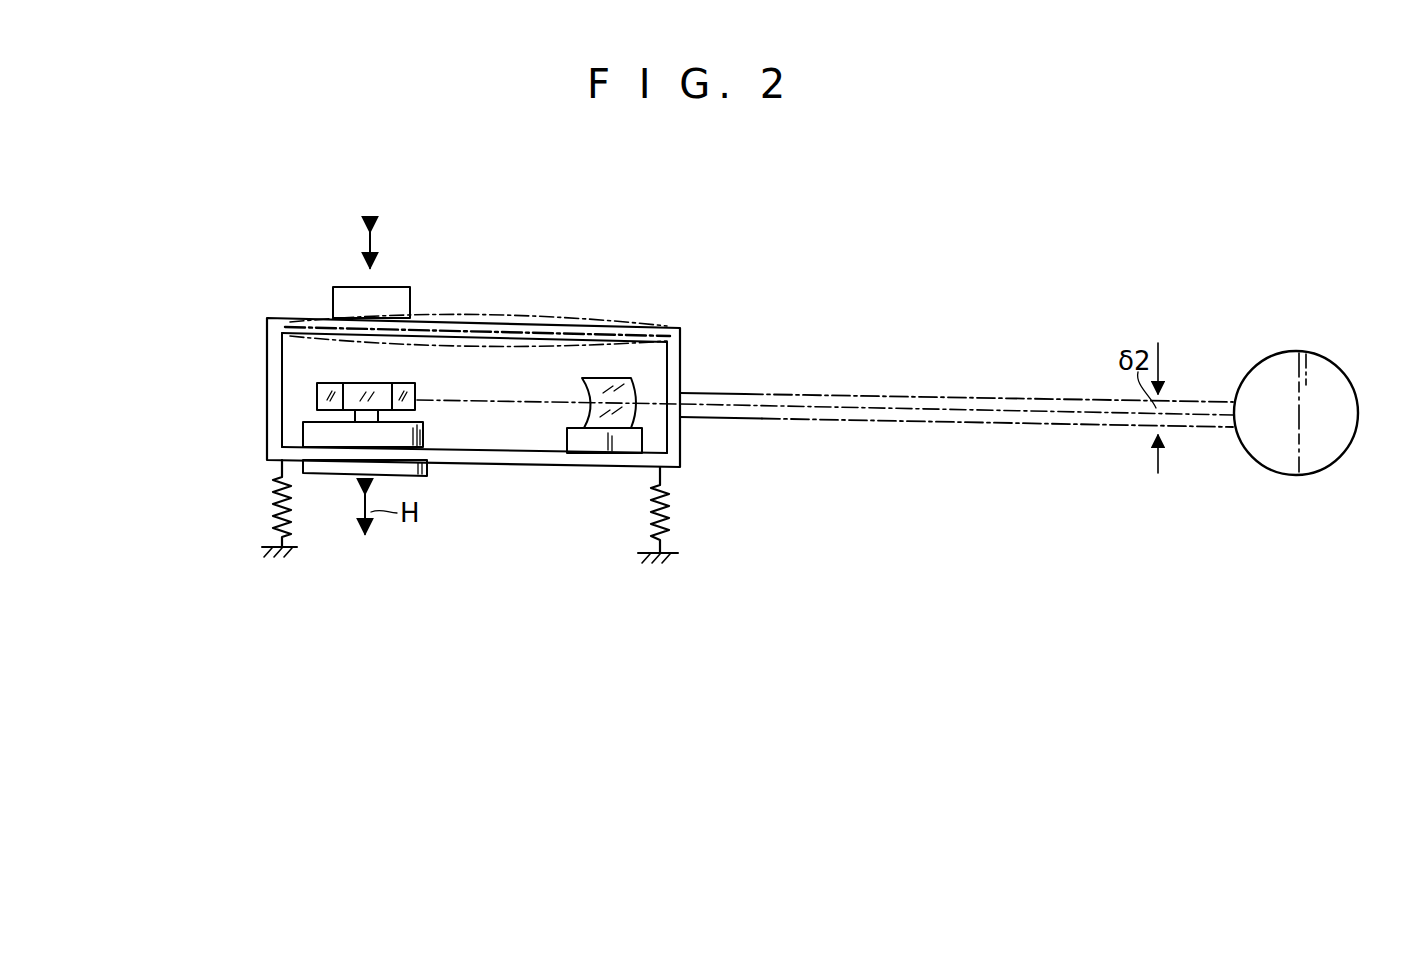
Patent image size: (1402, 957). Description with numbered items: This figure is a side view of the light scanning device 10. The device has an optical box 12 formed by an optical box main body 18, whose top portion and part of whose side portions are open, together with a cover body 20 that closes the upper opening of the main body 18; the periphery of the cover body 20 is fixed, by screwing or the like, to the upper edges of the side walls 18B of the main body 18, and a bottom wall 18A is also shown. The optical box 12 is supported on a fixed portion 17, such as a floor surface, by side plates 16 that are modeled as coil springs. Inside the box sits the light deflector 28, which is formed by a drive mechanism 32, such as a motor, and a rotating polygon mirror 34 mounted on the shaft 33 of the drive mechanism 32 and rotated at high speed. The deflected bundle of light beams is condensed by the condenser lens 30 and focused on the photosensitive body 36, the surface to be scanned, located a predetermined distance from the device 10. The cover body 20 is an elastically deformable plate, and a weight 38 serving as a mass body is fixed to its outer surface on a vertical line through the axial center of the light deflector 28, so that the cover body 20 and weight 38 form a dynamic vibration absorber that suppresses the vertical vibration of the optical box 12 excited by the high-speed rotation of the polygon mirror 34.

The light scanning device 10 is at (512, 238).
The optical box 12 is at (265, 370).
The side plates 16 is at (278, 497).
The fixed portion 17 is at (672, 553).
The optical box main body 18 is at (266, 452).
The bottom plate 18A is at (514, 468).
The side walls 18B is at (267, 347).
The cover body 20 is at (325, 317).
The light deflector 28 is at (291, 413).
The condenser lens 30 is at (622, 382).
The drive mechanism 32 is at (303, 432).
The shaft 33 is at (379, 416).
The rotating polygon mirror 34 is at (317, 399).
The photosensitive body 36 is at (1270, 473).
The weight 38 is at (333, 312).